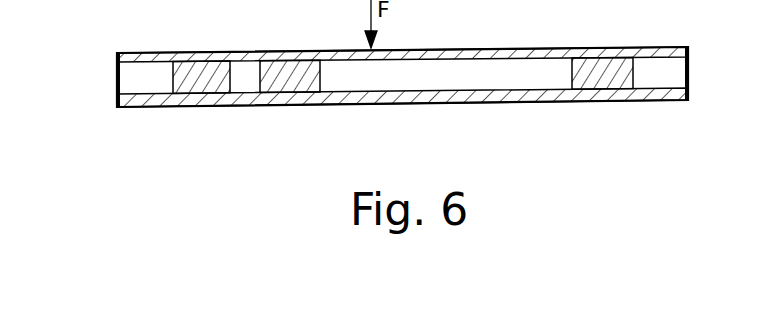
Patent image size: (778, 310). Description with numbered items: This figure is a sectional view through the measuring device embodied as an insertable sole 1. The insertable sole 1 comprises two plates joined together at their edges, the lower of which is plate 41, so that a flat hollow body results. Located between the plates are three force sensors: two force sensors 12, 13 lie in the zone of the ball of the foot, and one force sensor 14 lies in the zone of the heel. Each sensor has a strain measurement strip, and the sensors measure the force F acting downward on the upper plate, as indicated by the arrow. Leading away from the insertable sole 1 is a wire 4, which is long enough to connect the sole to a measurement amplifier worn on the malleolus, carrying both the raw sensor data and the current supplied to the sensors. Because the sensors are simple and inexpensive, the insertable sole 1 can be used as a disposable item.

The insertable sole 1 is at (112, 46).
The wire 4 is at (190, 58).
The plate 41 is at (403, 103).
The force sensor 12 is at (187, 95).
The force sensor 13 is at (279, 95).
The force sensor 14 is at (598, 83).